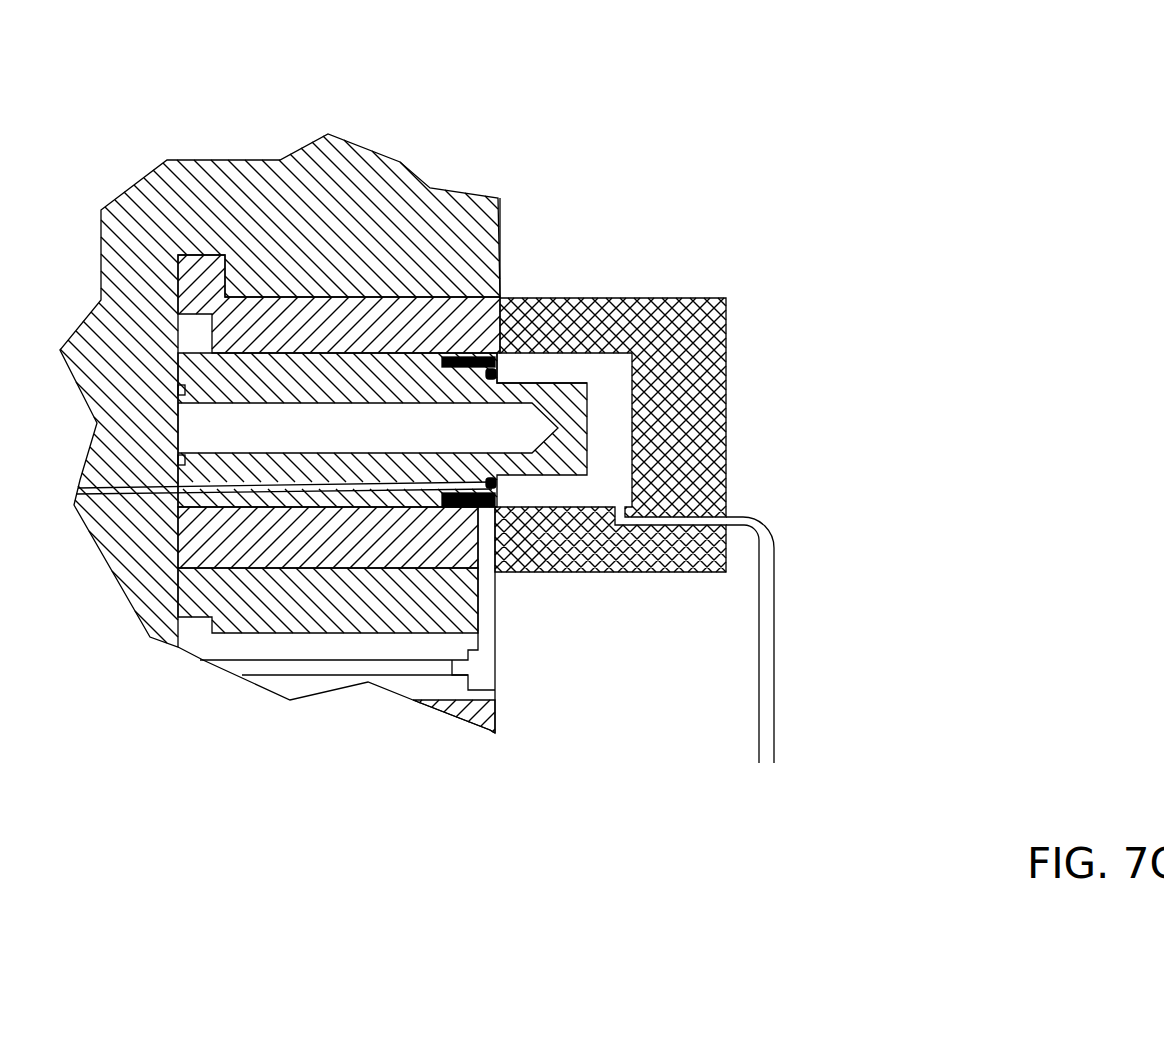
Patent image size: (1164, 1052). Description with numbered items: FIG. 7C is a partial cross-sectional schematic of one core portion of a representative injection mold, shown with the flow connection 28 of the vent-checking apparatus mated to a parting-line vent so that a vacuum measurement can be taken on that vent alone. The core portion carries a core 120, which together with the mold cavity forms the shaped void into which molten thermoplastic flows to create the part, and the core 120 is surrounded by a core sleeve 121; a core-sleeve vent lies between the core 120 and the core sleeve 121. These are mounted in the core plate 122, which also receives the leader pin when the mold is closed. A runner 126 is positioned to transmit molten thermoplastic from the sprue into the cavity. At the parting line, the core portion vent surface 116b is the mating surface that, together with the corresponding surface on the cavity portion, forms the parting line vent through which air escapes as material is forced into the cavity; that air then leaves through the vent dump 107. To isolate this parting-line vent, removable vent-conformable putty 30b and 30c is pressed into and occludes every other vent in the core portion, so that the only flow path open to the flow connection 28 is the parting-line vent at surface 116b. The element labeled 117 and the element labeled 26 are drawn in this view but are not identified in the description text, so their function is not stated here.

The core plate 122 is at (388, 188).
The vent dump 107 is at (500, 197).
The core sleeve 121 is at (412, 317).
The core 120 is at (567, 400).
The seal groove 117 is at (503, 352).
The vent-conformable putty 30b is at (500, 305).
The vent-conformable putty 30c is at (475, 508).
The core portion vent surface 116b is at (502, 347).
The flow connection 28 is at (692, 330).
The wire 26 is at (770, 705).
The runner 126 is at (488, 608).